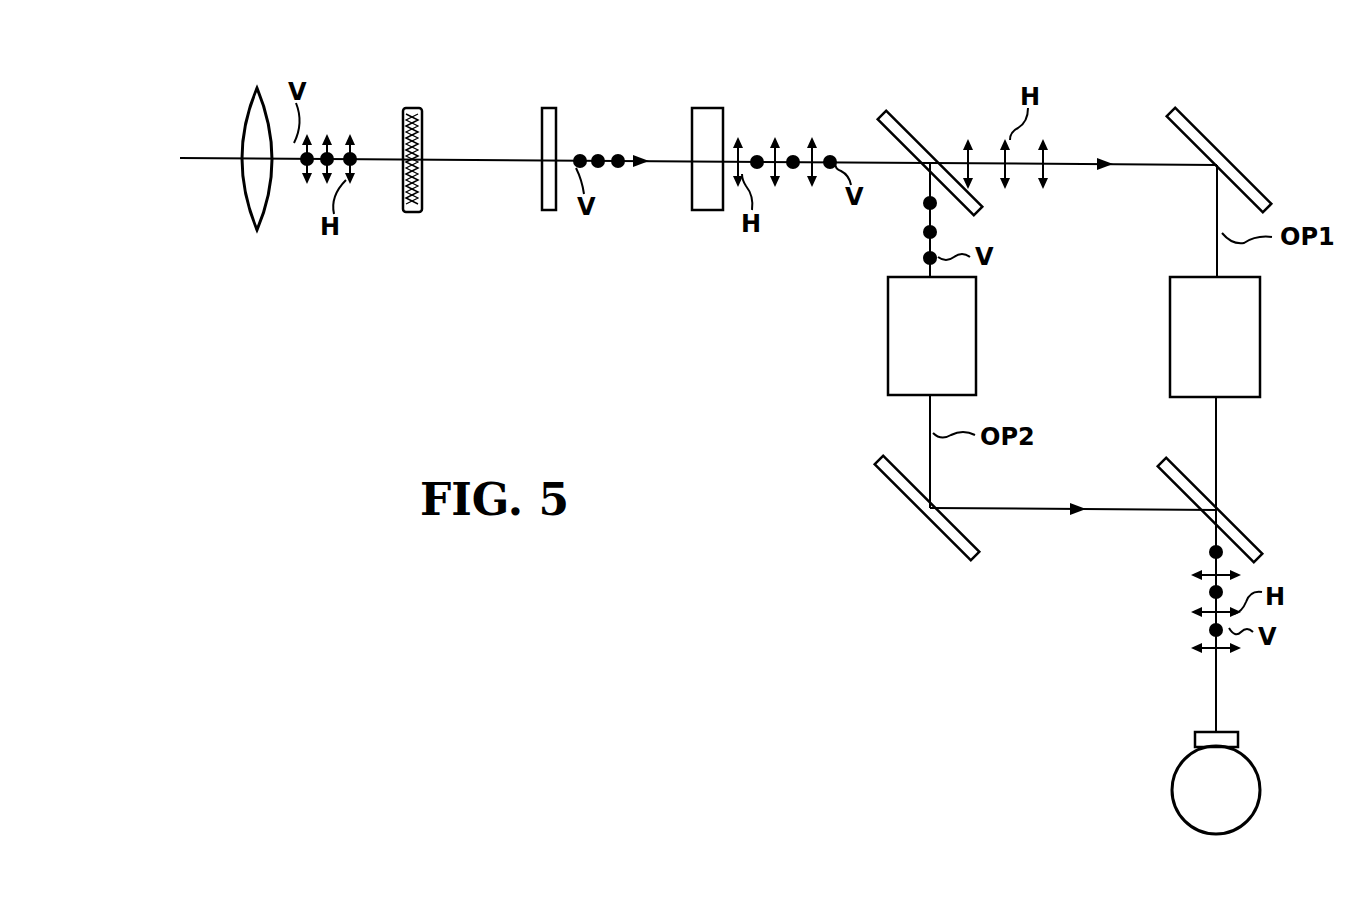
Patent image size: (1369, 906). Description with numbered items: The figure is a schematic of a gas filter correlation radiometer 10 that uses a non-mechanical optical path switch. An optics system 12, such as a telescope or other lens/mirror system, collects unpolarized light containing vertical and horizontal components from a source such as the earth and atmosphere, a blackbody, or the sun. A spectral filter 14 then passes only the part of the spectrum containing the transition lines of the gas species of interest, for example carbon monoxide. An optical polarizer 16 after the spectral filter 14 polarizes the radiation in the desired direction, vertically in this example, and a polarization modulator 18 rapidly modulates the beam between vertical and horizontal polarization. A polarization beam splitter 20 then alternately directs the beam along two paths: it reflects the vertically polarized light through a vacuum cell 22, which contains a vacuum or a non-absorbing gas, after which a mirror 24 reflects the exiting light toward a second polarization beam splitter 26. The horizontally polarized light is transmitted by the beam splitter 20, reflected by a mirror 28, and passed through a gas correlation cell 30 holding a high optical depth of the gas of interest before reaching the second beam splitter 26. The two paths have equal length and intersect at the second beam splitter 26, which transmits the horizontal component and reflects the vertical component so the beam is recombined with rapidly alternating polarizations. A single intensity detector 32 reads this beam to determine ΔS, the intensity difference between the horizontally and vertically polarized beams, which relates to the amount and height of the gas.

The gas filter correlation radiometer 10 is at (748, 54).
The optics system 12 is at (249, 111).
The spectral filter 14 is at (413, 108).
The optical polarizer 16 is at (550, 108).
The polarization modulator 18 is at (706, 212).
The polarization beam splitter 20 is at (910, 135).
The vacuum cell 22 is at (977, 321).
The mirror 24 is at (904, 506).
The second polarization beam splitter 26 is at (1230, 520).
The mirror 28 is at (1218, 136).
The gas correlation cell 30 is at (1261, 308).
The intensity detector 32 is at (1262, 792).